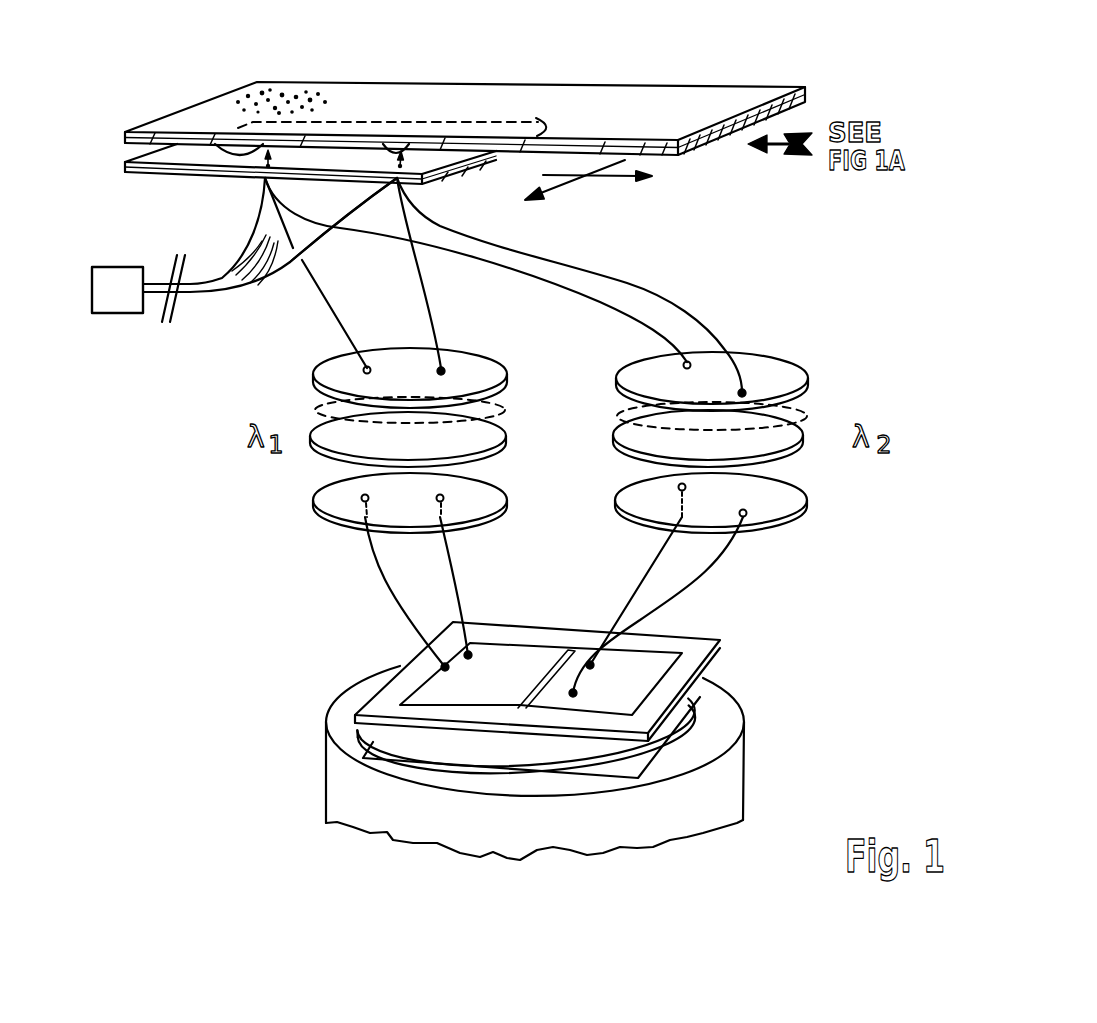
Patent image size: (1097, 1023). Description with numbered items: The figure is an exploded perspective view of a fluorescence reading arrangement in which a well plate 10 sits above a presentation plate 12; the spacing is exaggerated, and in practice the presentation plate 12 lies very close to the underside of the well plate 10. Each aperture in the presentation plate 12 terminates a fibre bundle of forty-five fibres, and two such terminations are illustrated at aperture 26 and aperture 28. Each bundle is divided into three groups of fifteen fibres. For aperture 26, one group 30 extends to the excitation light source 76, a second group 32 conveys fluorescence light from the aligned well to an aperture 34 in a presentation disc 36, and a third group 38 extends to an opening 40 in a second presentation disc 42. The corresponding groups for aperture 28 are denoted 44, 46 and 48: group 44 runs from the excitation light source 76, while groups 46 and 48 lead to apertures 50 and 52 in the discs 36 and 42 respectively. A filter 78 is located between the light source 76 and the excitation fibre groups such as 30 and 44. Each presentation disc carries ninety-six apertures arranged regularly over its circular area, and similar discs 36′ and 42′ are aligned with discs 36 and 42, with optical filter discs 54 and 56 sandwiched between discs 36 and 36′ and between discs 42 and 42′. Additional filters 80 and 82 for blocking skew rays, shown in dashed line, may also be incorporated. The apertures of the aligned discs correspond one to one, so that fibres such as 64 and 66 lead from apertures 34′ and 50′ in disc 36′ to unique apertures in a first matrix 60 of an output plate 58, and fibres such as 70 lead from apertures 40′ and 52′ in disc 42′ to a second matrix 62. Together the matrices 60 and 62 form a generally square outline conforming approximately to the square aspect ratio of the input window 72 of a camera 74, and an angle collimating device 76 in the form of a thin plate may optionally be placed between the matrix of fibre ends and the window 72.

The well plate 10 is at (678, 87).
The presentation plate 12 is at (456, 166).
The aperture 26 is at (218, 142).
The aperture 28 is at (387, 143).
The group of fibres 30 is at (258, 217).
The group of fibres 32 is at (325, 298).
The aperture 34 is at (372, 364).
The aperture 34′ is at (363, 504).
The presentation disc 36 is at (312, 368).
The presentation disc 36′ is at (312, 498).
The group of fibres 38 is at (303, 206).
The opening 40 is at (680, 366).
The aperture 40′ is at (650, 530).
The second presentation disc 42 is at (808, 375).
The presentation disc 42′ is at (808, 503).
The group of fibres 44 is at (328, 240).
The group of fibres 46 is at (432, 302).
The group of fibres 48 is at (638, 282).
The aperture 50 is at (452, 368).
The aperture 50′ is at (447, 498).
The aperture 52 is at (748, 389).
The aperture 52′ is at (788, 528).
The optical filter disc 54 is at (408, 439).
The optical filter disc 56 is at (650, 442).
The output plate 58 is at (745, 634).
The first matrix 60 is at (487, 675).
The second matrix 62 is at (601, 681).
The fibres 64 is at (389, 590).
The optical fiber 66 is at (452, 548).
The fibre 70 is at (740, 548).
The input window 72 is at (374, 741).
The camera 74 is at (748, 773).
The excitation light source 76 is at (140, 266).
The filter 78 is at (178, 303).
The additional filter 80 is at (507, 405).
The additional filter 82 is at (820, 412).